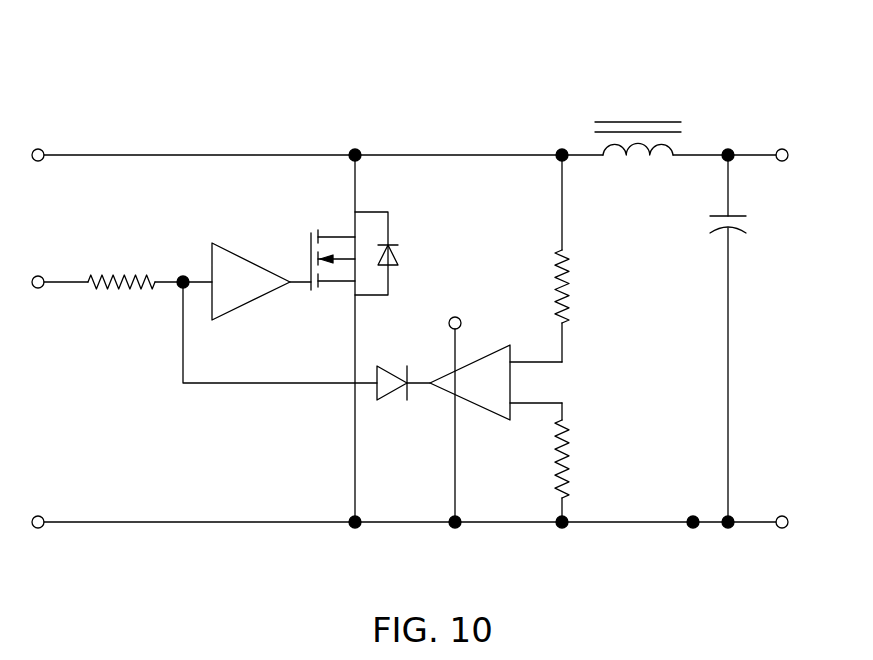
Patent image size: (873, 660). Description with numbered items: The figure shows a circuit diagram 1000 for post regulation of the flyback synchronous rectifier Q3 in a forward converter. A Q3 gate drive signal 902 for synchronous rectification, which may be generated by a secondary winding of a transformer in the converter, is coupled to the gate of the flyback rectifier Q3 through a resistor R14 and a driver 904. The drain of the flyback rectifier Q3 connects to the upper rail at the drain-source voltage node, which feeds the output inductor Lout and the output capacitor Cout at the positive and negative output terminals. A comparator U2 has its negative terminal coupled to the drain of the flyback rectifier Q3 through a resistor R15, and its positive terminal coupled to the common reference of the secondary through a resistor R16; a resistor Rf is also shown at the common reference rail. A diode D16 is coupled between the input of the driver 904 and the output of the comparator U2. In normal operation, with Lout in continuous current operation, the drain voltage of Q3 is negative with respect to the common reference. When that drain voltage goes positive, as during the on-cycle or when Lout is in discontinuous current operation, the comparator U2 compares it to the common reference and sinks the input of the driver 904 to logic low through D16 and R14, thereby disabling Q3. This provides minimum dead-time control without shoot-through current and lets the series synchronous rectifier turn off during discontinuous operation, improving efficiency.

The circuit diagram 1000 is at (163, 96).
The Q3 gate drive signal 902 is at (56, 283).
The driver 904 is at (251, 260).
The resistor R14 is at (150, 267).
The flyback synchronous rectifier Q3 is at (368, 253).
The diode D16 is at (306, 358).
The comparator U2 is at (496, 407).
The resistor R15 is at (584, 258).
The resistor R16 is at (584, 462).
The resistor Rf is at (678, 489).
The output inductor Lout is at (638, 121).
The output capacitor Cout is at (752, 338).